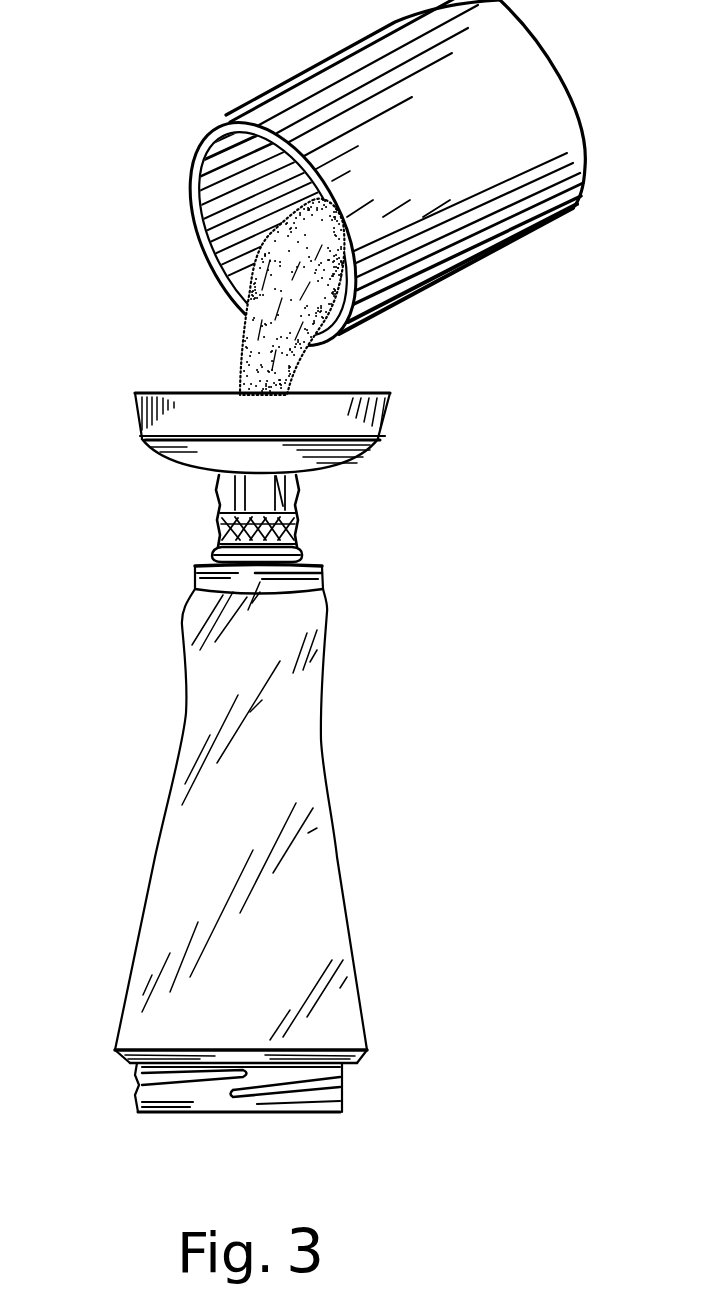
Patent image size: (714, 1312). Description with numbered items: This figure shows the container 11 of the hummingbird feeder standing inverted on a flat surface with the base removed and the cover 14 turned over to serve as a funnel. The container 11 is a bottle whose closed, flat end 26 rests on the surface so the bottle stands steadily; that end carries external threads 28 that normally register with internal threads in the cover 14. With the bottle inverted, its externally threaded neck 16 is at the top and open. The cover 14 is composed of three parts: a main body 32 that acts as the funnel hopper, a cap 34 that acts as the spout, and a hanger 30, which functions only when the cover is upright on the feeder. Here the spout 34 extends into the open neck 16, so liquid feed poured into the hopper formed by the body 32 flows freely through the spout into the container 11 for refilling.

The feed container 11 is at (328, 782).
The cover 14 is at (376, 457).
The neck 16 is at (293, 541).
The end 26 is at (334, 1115).
The external threads 28 is at (343, 1083).
The hanger 30 is at (221, 533).
The main body 32 is at (138, 432).
The cap 34 is at (262, 497).